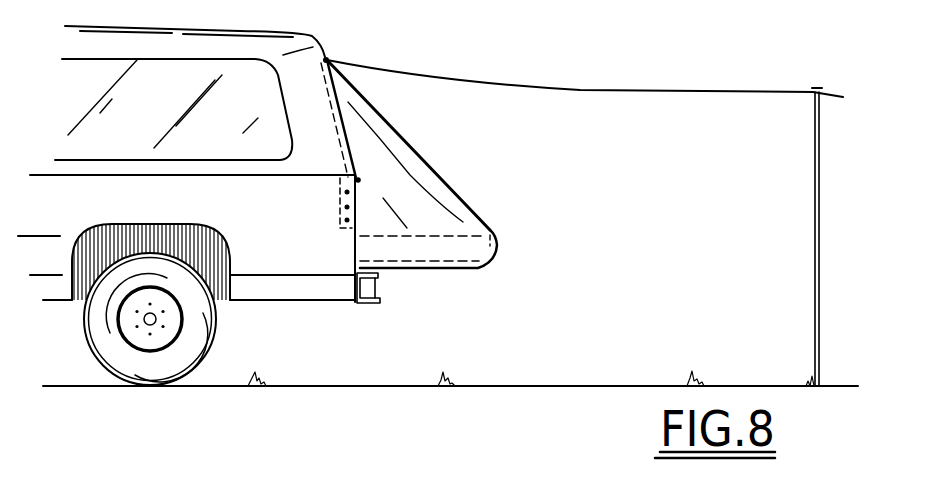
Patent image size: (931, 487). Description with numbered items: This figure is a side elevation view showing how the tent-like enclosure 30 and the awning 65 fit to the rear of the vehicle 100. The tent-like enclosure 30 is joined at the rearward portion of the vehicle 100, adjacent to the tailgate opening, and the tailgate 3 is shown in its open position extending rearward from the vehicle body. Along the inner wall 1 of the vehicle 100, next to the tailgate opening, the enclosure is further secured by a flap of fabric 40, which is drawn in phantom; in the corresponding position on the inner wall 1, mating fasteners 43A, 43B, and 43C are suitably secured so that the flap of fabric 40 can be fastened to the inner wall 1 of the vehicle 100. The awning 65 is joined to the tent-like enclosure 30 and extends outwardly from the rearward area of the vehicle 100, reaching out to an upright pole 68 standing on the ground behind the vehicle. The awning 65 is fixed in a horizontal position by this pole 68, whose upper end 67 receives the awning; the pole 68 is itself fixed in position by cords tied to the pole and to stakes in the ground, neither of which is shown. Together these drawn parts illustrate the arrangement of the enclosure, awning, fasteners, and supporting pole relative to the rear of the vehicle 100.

The vehicle 100 is at (315, 46).
The inner wall 1 is at (338, 181).
The tent-like enclosure 30 is at (385, 130).
The tailgate 3 is at (466, 236).
The flap of fabric 40 is at (352, 232).
The mating fastener 43A is at (347, 192).
The mating fastener 43B is at (347, 207).
The mating fastener 43C is at (347, 220).
The awning 65 is at (586, 91).
The pole top 67 is at (816, 90).
The pole 68 is at (814, 228).